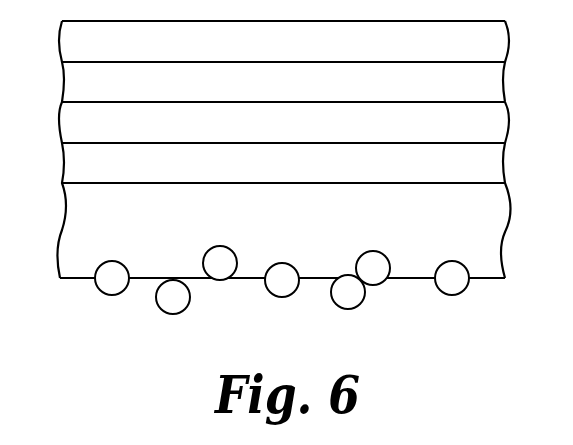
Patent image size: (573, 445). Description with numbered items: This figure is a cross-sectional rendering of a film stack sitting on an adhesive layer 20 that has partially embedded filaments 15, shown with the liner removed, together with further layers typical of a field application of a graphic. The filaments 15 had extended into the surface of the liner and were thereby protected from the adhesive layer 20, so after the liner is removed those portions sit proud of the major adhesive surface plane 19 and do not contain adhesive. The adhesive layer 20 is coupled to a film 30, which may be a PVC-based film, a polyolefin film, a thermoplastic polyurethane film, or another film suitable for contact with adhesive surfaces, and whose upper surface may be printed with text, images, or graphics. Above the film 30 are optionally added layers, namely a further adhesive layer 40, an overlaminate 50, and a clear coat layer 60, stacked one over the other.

The clear coat layer 60 is at (302, 50).
The overlaminate 50 is at (302, 92).
The further adhesive layer 40 is at (302, 134).
The film 30 is at (302, 174).
The adhesive layer 20 is at (302, 228).
The major adhesive surface plane 19 is at (75, 280).
The filaments 15 is at (226, 269).